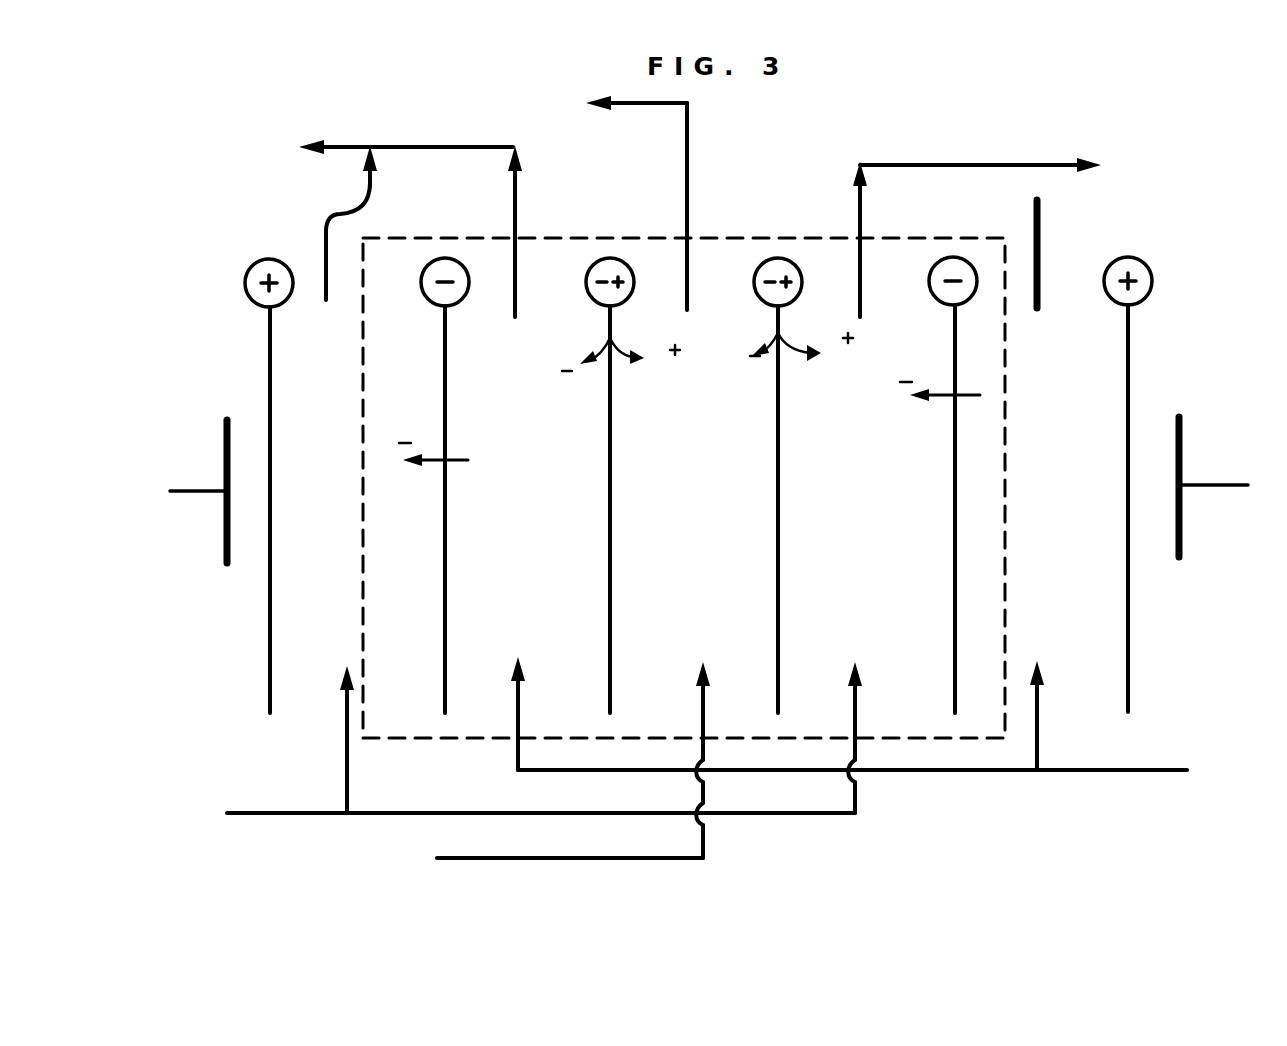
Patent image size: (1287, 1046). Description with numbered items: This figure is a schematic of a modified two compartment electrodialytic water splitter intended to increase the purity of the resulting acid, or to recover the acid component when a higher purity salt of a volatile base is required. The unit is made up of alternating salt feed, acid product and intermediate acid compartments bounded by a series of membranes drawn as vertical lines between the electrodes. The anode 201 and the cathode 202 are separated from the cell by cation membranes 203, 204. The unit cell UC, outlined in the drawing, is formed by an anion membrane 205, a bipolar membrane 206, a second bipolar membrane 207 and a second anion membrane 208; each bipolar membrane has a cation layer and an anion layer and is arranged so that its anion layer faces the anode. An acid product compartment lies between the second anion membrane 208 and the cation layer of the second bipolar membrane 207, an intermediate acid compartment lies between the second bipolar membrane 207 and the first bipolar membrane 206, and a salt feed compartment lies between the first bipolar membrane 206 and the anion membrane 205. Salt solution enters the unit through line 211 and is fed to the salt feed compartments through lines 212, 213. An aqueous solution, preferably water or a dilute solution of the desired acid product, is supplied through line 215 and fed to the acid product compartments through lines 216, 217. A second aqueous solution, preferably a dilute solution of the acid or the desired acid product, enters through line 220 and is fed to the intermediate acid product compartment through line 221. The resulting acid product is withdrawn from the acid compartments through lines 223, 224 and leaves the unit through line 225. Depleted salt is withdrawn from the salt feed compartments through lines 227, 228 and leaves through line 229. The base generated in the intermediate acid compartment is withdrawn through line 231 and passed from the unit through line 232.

The anode 201 is at (225, 452).
The cathode 202 is at (1182, 450).
The cation membrane 203 is at (268, 352).
The cation membrane 204 is at (1130, 336).
The anion membrane 205 is at (443, 338).
The bipolar membrane 206 is at (608, 322).
The second bipolar membrane 207 is at (776, 318).
The second anion membrane 208 is at (953, 325).
The line 211 is at (1140, 768).
The line 212 is at (1040, 712).
The line 213 is at (520, 712).
The line 215 is at (297, 815).
The line 216 is at (345, 716).
The line 217 is at (858, 712).
The line 220 is at (465, 860).
The line 221 is at (705, 712).
The line 223 is at (862, 218).
The line 224 is at (1040, 246).
The line 225 is at (997, 165).
The line 227 is at (519, 203).
The line 228 is at (320, 236).
The line 229 is at (341, 143).
The line 231 is at (690, 183).
The line 232 is at (626, 107).
The unit cell UC is at (395, 238).